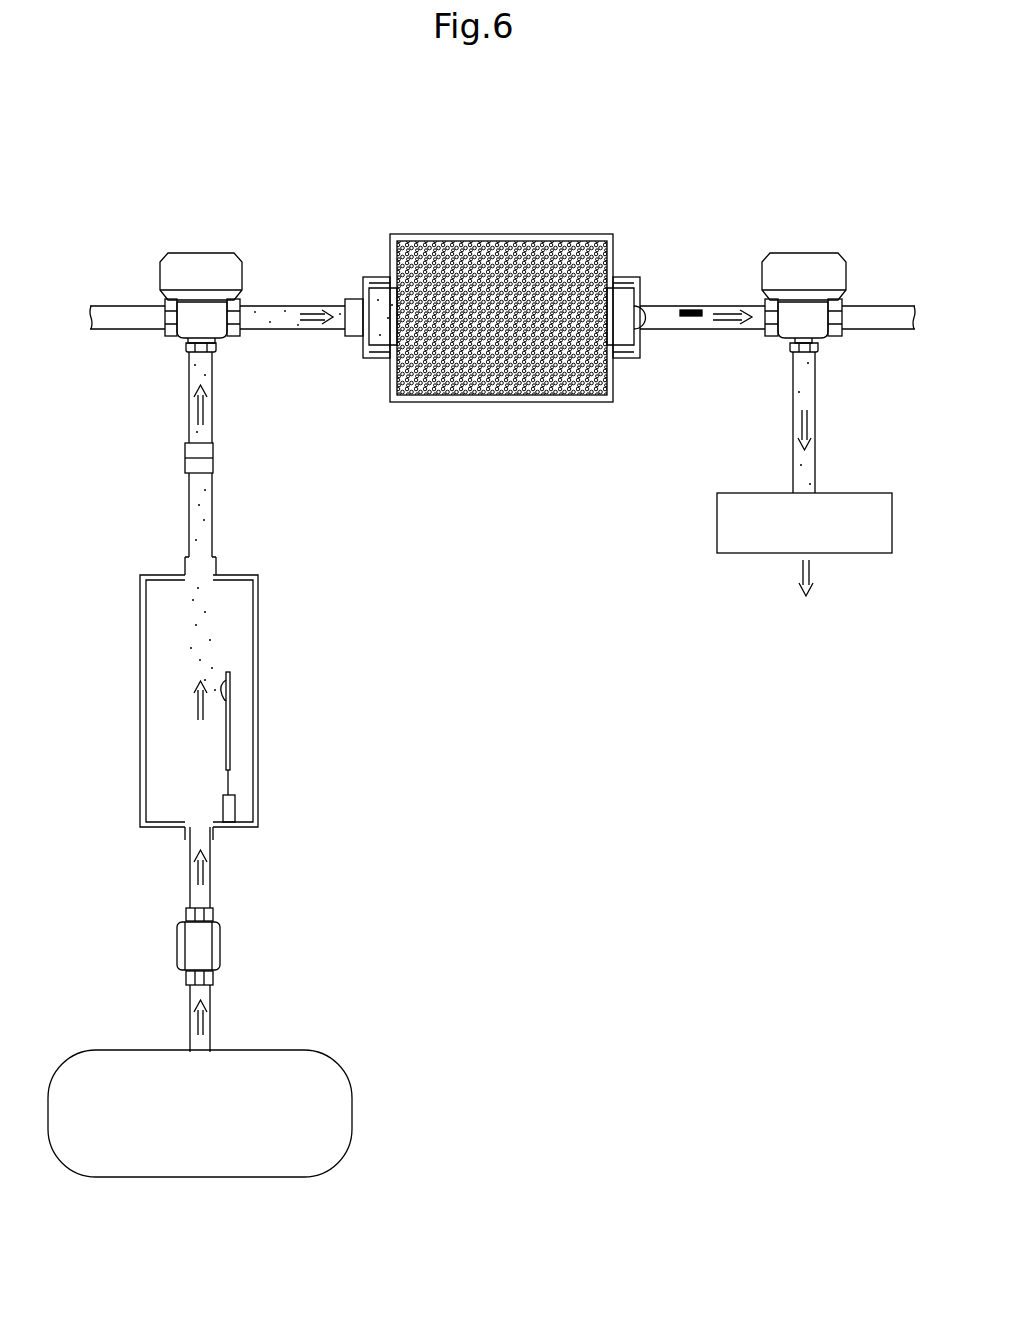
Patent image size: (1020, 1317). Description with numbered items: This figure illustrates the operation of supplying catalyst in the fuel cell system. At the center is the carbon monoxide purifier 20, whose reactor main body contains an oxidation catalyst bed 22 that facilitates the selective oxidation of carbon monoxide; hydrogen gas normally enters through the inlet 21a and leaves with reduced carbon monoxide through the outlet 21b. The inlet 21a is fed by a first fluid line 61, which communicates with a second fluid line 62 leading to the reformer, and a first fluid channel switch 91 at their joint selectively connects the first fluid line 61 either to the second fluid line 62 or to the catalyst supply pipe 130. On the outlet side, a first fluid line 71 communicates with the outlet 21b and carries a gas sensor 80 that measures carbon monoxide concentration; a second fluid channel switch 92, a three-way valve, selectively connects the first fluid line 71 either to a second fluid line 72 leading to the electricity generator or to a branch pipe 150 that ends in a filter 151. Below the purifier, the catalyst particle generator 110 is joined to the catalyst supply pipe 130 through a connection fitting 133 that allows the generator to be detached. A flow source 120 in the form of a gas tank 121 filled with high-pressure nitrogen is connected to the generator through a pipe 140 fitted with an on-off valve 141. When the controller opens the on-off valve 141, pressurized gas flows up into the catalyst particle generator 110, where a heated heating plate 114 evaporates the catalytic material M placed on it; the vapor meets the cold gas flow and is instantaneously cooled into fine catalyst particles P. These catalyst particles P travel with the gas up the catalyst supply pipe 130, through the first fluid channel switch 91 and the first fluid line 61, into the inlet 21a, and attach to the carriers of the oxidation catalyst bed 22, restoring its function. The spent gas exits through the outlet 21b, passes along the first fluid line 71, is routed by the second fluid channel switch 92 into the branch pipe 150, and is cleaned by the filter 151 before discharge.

The carbon monoxide purifier 20 is at (501, 305).
The inlet 21a is at (373, 292).
The outlet 21b is at (643, 290).
The oxidation catalyst bed 22 is at (476, 380).
The first fluid line 61 is at (316, 305).
The second fluid line 62 is at (113, 304).
The first fluid line 71 is at (702, 286).
The second fluid line 72 is at (880, 304).
The gas sensor 80 is at (693, 308).
The first fluid channel switch 91 is at (218, 266).
The second fluid channel switch 92 is at (816, 268).
The catalyst particle generator 110 is at (185, 718).
The heating plate 114 is at (232, 732).
The catalyst supply pipe 130 is at (212, 515).
The connection fitting 133 is at (213, 452).
The pipe 140 is at (210, 888).
The on-off valve 141 is at (210, 945).
The branch pipe 150 is at (815, 425).
The filter 151 is at (743, 545).
The flow source 120 is at (262, 1130).
The gas tank 121 is at (323, 1145).
The catalyst particles P is at (185, 650).
The catalytic material M is at (228, 678).